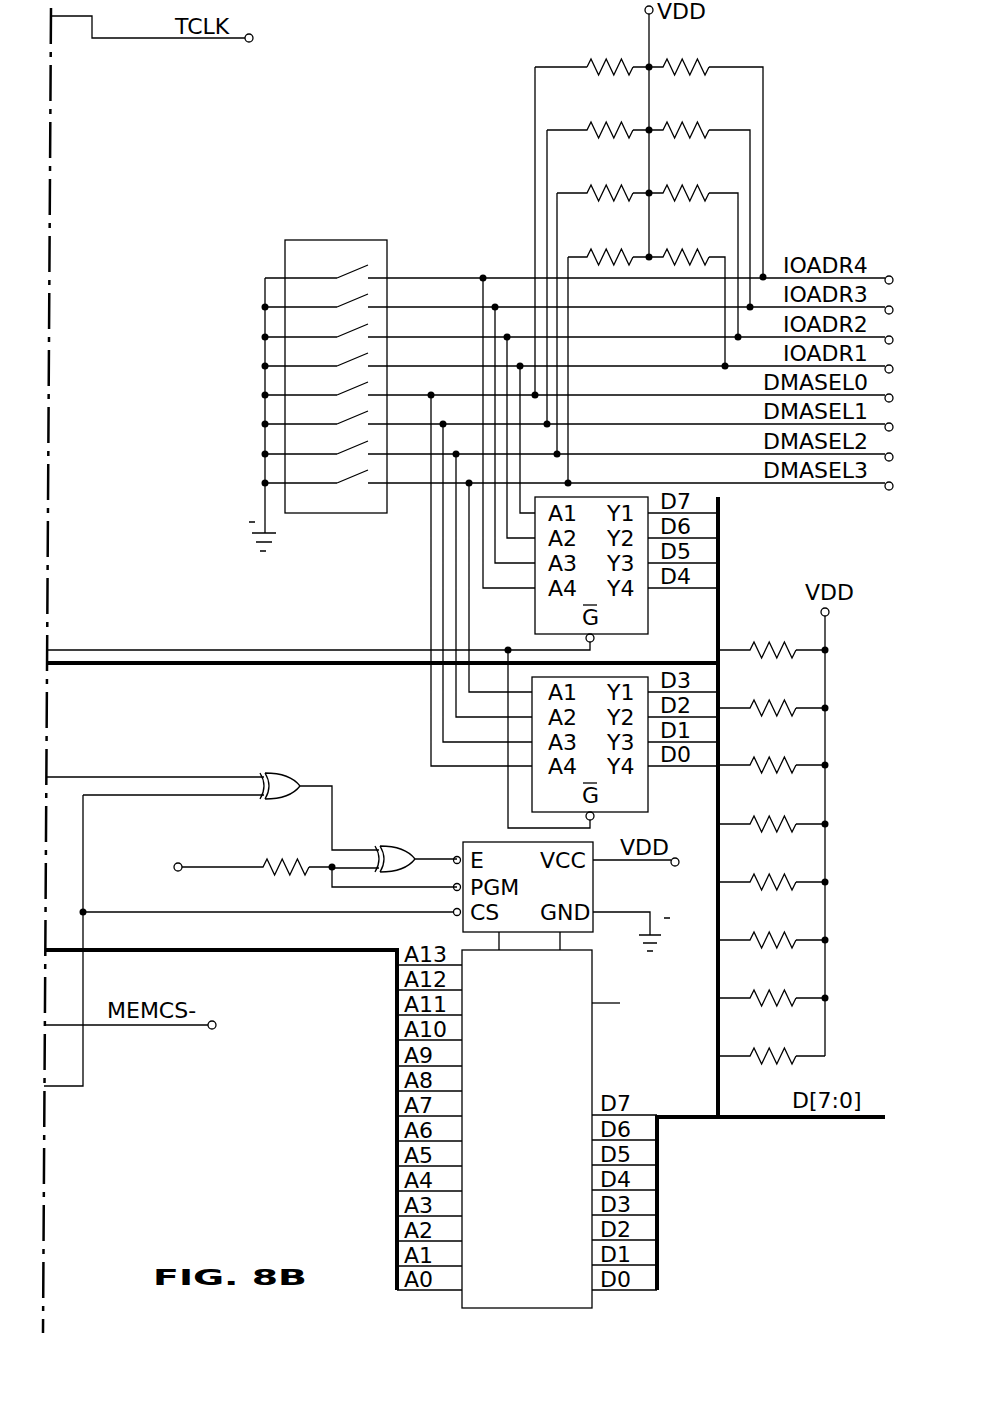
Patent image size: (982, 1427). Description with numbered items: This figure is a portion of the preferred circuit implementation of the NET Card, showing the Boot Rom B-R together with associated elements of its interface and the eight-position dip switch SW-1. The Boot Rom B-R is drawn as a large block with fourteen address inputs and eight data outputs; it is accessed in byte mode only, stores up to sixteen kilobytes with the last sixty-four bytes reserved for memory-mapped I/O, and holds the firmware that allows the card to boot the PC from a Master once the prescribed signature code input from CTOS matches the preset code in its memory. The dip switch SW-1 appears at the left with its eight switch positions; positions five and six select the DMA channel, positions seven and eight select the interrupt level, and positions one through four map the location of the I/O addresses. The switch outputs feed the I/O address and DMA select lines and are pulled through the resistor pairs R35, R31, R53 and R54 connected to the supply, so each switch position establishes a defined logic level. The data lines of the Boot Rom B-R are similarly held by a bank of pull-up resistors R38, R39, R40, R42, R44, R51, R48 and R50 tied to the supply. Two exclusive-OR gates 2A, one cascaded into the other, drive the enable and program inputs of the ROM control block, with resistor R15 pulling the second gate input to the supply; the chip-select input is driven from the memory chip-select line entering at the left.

The pull-up/pull-down resistor pair R35 is at (649, 214).
The pull-up/pull-down resistor pair R31 is at (649, 260).
The pull-up/pull-down resistor pair R53 is at (648, 307).
The pull-up/pull-down resistor pair R54 is at (647, 353).
The eight-position dip switch SW-1 is at (322, 513).
The data bus pull-up resistor R38 is at (773, 634).
The data bus pull-up resistor R39 is at (773, 692).
The data bus pull-up resistor R40 is at (773, 749).
The data bus pull-up resistor R42 is at (773, 808).
The data bus pull-up resistor R44 is at (773, 866).
The data bus pull-up resistor R51 is at (773, 924).
The data bus pull-up resistor R48 is at (773, 982).
The data bus pull-up resistor R50 is at (771, 1040).
The pull-up resistor R15 is at (315, 857).
The exclusive-OR gate 2A is at (250, 918).
The Boot Rom B-R is at (592, 1043).